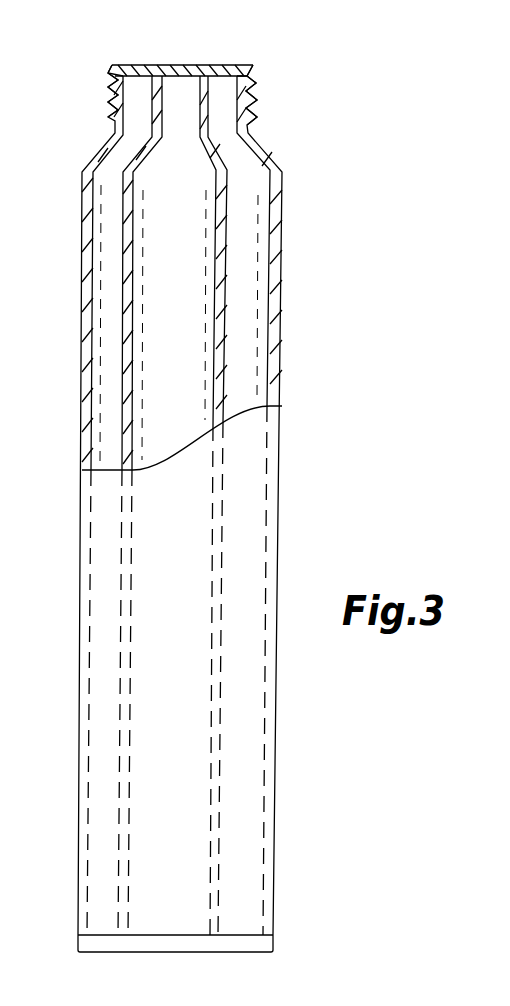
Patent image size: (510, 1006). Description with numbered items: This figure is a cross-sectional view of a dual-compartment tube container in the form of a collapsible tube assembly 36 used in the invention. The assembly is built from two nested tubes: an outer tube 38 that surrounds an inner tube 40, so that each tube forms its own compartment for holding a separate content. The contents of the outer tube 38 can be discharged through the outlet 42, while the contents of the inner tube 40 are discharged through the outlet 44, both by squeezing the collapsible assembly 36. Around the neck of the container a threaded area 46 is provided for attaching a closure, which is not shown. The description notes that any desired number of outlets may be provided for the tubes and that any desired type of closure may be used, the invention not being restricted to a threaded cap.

The collapsible tube assembly 36 is at (288, 322).
The outer tube 38 is at (110, 265).
The inner tube 40 is at (180, 312).
The outlet 42 is at (142, 64).
The outlet 44 is at (180, 64).
The threaded area 46 is at (255, 117).